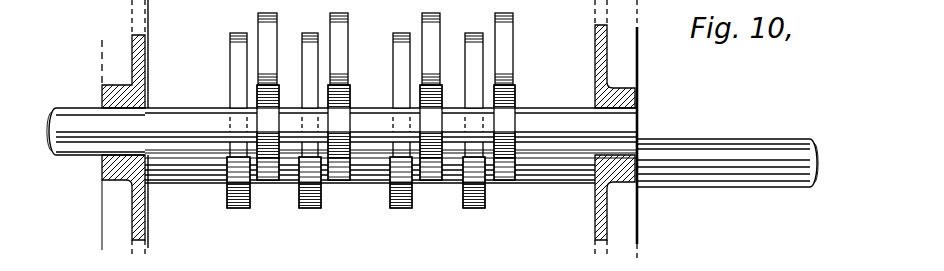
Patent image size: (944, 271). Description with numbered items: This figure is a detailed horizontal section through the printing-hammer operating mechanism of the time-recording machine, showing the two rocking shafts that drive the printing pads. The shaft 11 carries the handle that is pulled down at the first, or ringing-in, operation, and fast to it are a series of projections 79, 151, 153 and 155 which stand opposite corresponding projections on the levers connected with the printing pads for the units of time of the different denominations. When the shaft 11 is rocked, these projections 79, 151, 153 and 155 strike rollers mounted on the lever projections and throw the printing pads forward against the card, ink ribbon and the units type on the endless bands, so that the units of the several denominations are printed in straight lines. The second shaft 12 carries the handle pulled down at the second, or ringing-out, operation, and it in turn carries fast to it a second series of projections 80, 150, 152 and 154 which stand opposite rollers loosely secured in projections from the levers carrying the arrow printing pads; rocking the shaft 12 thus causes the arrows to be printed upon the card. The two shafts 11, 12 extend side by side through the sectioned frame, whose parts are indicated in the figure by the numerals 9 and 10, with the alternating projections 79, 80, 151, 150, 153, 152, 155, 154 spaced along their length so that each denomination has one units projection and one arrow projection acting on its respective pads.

The right wall / partition 9 is at (626, 212).
The left wall / partition 10 is at (108, 212).
The shaft 11 is at (731, 171).
The shaft 12 is at (92, 119).
The projection 79 is at (242, 71).
The projection 80 is at (269, 22).
The projection 150 is at (339, 32).
The projection 151 is at (309, 43).
The projection 152 is at (432, 28).
The projection 153 is at (402, 55).
The projection 154 is at (501, 43).
The projection 155 is at (473, 62).